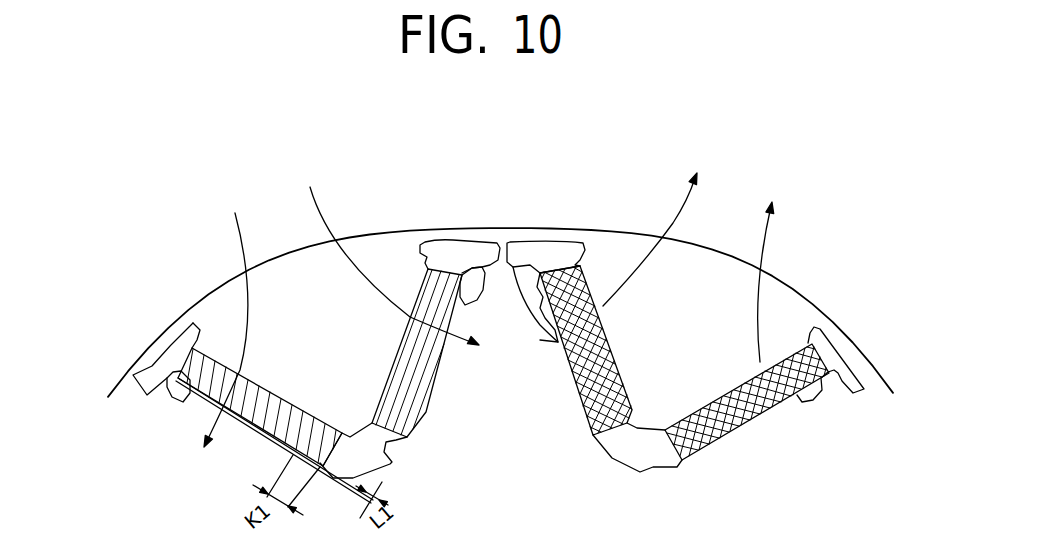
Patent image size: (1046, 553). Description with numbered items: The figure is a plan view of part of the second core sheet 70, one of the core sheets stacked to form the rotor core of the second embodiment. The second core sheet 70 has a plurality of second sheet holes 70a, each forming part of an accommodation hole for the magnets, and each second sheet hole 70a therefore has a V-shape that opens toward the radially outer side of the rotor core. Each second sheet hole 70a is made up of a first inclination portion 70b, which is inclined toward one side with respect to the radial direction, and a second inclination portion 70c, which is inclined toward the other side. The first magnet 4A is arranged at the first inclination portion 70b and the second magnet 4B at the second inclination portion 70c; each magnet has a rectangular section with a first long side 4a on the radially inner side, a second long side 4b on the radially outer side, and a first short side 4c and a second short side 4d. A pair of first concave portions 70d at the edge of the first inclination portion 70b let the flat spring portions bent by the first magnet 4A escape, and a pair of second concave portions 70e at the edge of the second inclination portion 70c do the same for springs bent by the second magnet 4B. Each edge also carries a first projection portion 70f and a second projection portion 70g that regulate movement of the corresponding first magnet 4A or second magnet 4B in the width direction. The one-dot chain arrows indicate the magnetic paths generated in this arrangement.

The second core sheet 70 is at (362, 232).
The second sheet hole 70a is at (184, 316).
The first inclination portion 70b is at (413, 310).
The second inclination portion 70c is at (259, 378).
The first concave portion 70d is at (477, 264).
The second concave portion 70e is at (163, 378).
The first projection portion 70f is at (462, 272).
The second projection portion 70g is at (394, 457).
The first long side 4a is at (525, 262).
The second long side 4b is at (615, 310).
The first short side 4c is at (647, 430).
The second short side 4d is at (563, 267).
The first magnet 4A is at (786, 345).
The second magnet 4B is at (592, 300).